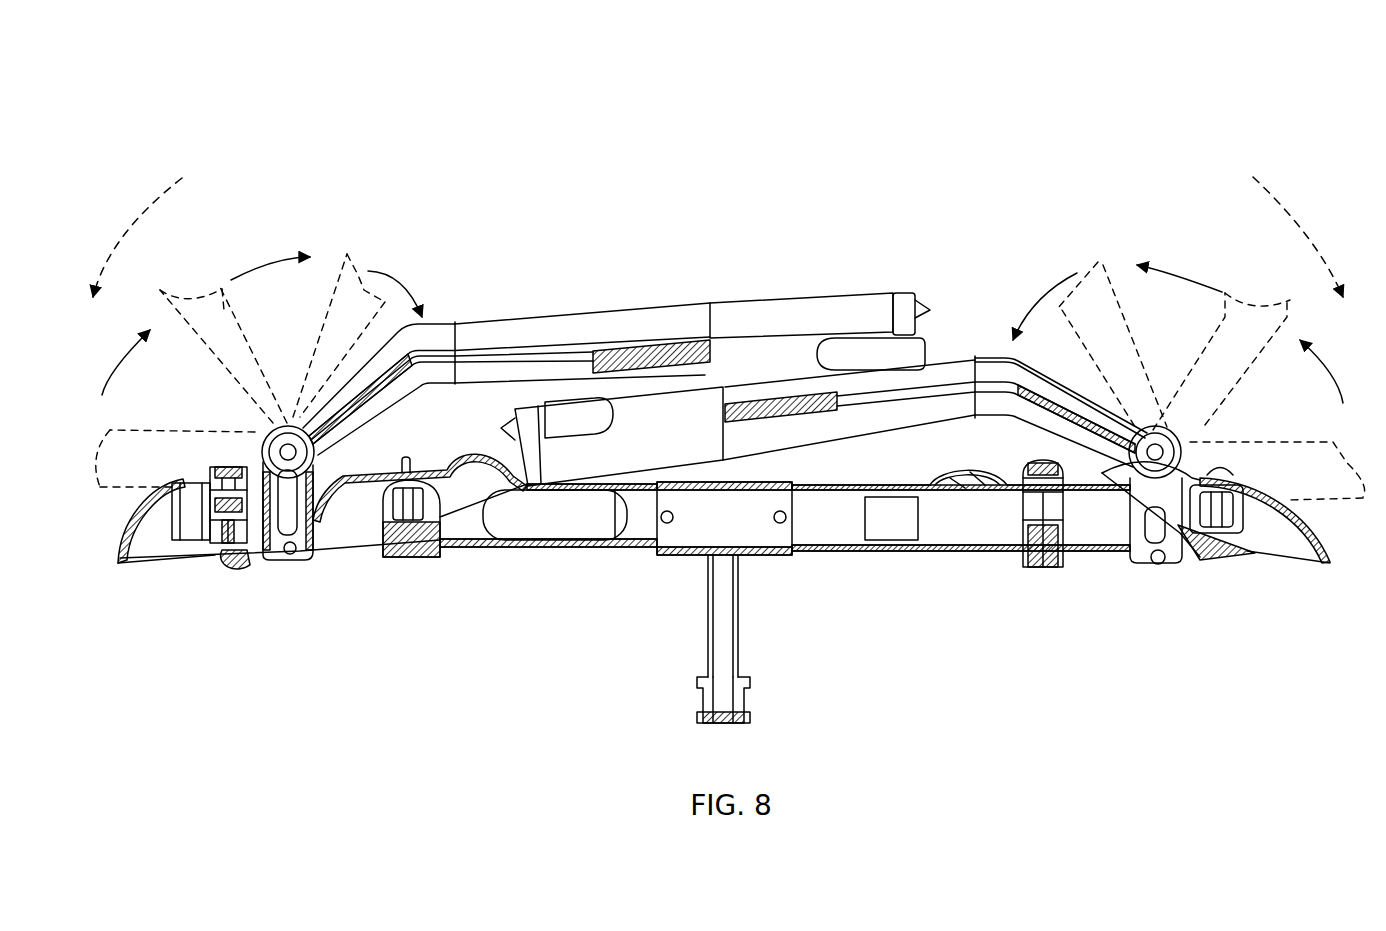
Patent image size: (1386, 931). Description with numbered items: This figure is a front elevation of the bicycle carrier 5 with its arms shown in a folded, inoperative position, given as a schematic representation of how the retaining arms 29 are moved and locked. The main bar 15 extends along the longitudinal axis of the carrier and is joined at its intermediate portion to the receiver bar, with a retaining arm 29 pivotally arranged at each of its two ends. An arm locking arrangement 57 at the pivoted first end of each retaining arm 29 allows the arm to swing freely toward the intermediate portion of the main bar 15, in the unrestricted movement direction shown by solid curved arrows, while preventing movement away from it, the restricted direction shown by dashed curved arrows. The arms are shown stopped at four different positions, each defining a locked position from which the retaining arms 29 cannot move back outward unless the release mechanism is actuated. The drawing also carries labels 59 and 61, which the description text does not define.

The bicycle carrier 5 is at (596, 88).
The main bar 15 is at (827, 512).
The retaining arm 29 is at (583, 405).
The arm locking arrangement 57 is at (237, 427).
The rotation direction 59 is at (233, 280).
The swing path 61 is at (123, 237).